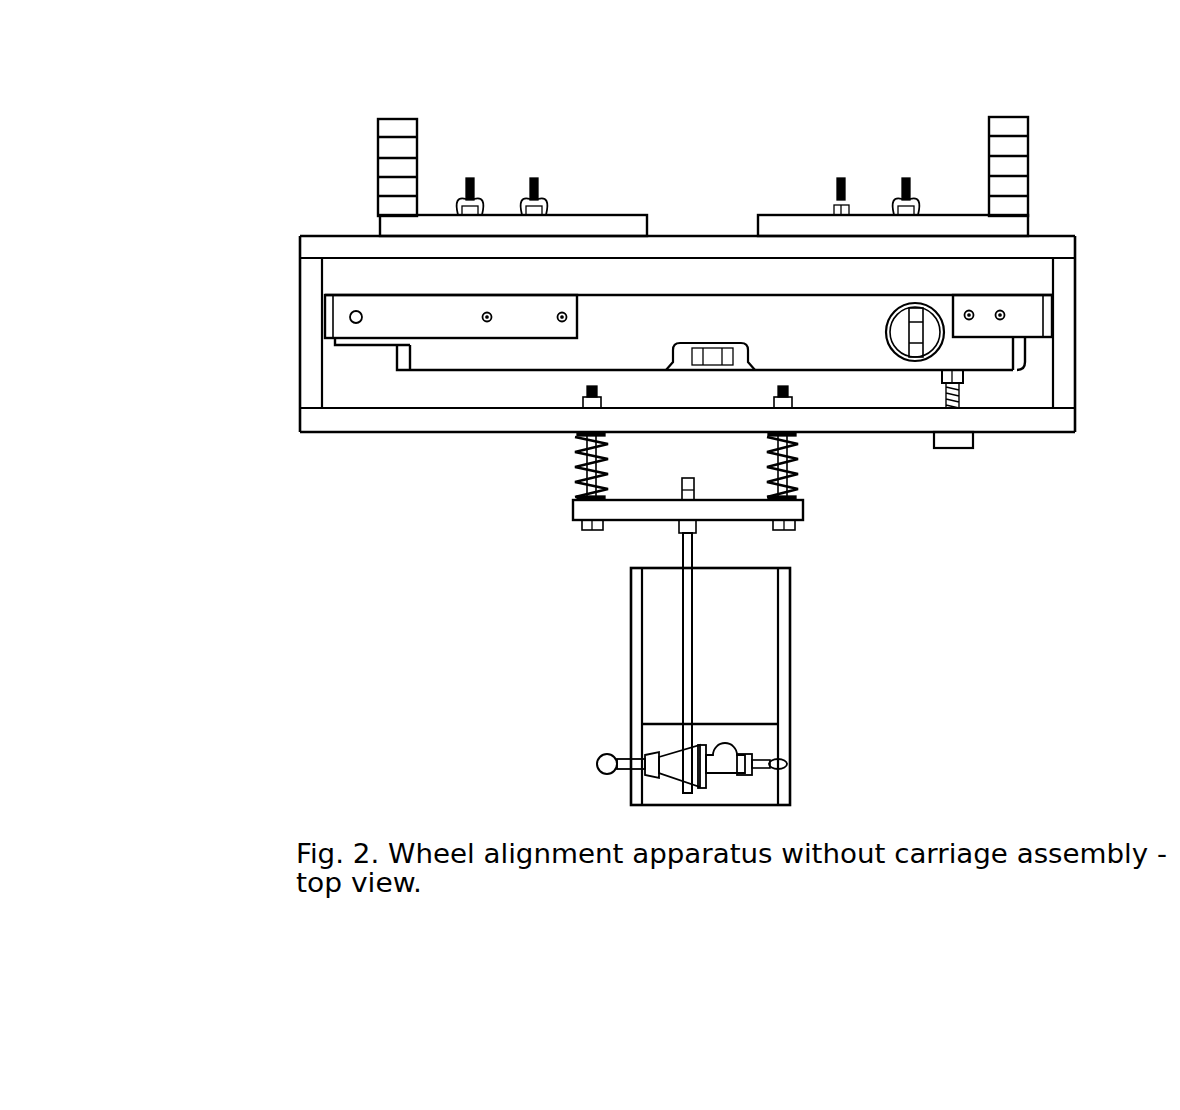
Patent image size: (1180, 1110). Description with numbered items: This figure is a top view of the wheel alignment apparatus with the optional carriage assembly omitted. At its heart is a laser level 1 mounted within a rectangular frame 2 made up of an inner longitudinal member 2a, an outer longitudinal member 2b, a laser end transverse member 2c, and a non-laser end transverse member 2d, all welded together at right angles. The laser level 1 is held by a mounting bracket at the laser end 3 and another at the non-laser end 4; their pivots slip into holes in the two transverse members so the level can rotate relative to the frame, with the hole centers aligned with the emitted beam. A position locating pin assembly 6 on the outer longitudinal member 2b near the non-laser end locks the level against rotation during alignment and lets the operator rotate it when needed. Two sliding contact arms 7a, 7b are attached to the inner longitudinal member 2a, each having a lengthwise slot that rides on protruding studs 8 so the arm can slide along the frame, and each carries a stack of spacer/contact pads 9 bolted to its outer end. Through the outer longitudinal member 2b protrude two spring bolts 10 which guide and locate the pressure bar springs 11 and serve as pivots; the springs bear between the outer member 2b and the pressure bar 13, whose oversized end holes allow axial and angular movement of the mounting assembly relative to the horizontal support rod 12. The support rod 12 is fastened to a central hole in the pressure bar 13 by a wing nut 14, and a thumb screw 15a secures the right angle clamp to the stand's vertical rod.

The laser level 1 is at (639, 342).
The frame 2 is at (681, 347).
The inner longitudinal member 2a is at (348, 236).
The outer longitudinal member 2b is at (515, 432).
The laser end transverse member 2c is at (300, 318).
The non-laser end transverse member 2d is at (1075, 330).
The mounting bracket at the laser end 3 is at (434, 330).
The mounting bracket at the non-laser end 4 is at (1036, 327).
The position locating pin assembly 6 is at (973, 450).
The sliding contact arm at the laser end 7a is at (588, 215).
The sliding contact arm at the non-laser end 7b is at (793, 215).
The protruding studs 8 is at (535, 178).
The spacer/contact pads 9 is at (378, 203).
The spring bolts 10 is at (776, 389).
The pressure bar springs 11 is at (572, 465).
The horizontal support rod 12 is at (707, 552).
The pressure bar 13 is at (615, 530).
The wing nut 14 is at (692, 480).
The thumb screw 15a is at (790, 764).